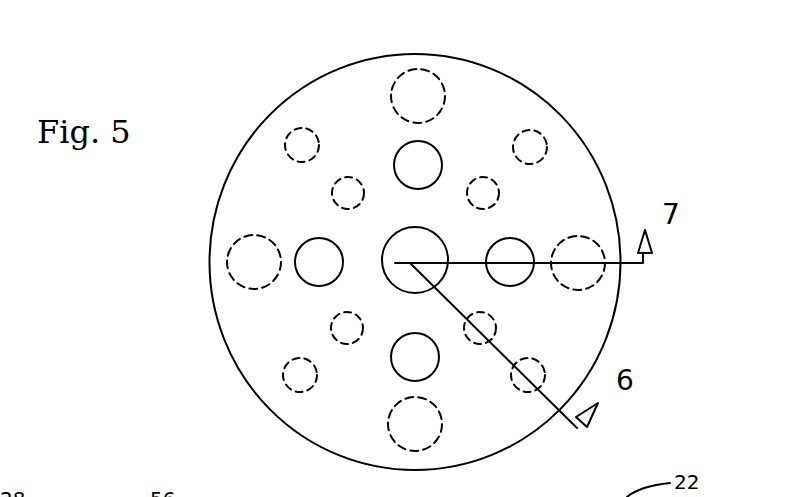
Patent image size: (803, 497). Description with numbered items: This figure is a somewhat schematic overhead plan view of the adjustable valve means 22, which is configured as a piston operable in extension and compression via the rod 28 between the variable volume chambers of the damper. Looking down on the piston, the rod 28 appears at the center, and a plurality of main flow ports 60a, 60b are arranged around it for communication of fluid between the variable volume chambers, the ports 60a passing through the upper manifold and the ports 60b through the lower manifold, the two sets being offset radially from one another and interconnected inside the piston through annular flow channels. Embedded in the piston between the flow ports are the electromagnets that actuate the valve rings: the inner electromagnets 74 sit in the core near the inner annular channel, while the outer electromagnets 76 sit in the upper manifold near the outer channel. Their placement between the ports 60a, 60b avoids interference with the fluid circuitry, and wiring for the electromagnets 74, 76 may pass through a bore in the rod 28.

The adjustable valve means 22 is at (355, 60).
The rod 28 is at (415, 260).
The main flow ports 60a is at (300, 246).
The main flow ports 60b is at (427, 71).
The inner electromagnets 74 is at (332, 194).
The outer electromagnets 76 is at (291, 130).